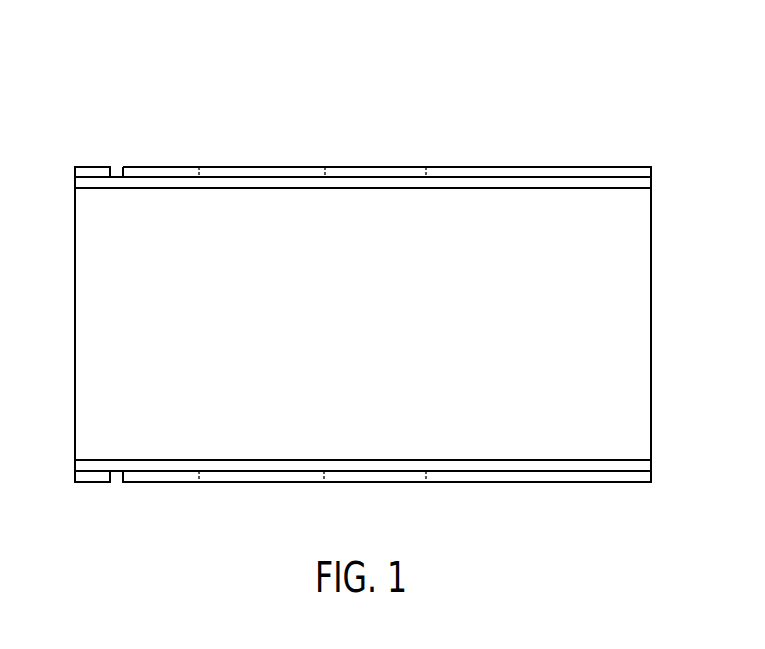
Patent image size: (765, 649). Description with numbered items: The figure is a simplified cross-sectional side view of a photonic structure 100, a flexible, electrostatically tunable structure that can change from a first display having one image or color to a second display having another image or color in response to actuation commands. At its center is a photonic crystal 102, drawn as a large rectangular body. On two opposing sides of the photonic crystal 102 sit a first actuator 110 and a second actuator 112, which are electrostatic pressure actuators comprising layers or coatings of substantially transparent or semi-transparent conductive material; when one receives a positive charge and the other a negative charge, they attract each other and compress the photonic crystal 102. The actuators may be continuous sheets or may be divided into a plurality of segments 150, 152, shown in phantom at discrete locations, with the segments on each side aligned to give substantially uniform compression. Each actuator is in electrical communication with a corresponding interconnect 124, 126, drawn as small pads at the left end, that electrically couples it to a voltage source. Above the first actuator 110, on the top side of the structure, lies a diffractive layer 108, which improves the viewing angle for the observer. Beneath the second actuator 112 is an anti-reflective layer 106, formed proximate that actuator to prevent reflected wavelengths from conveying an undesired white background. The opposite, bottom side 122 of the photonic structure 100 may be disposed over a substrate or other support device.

The photonic structure 100 is at (603, 102).
The photonic crystal 102 is at (105, 306).
The anti-reflective layer 106 is at (165, 484).
The diffractive layer 108 is at (165, 165).
The first actuator 110 is at (260, 185).
The second actuator 112 is at (261, 463).
The bottom side 122 is at (494, 460).
The interconnect 124 is at (93, 164).
The interconnect 126 is at (93, 484).
The segment 150 is at (374, 185).
The segment 152 is at (378, 463).